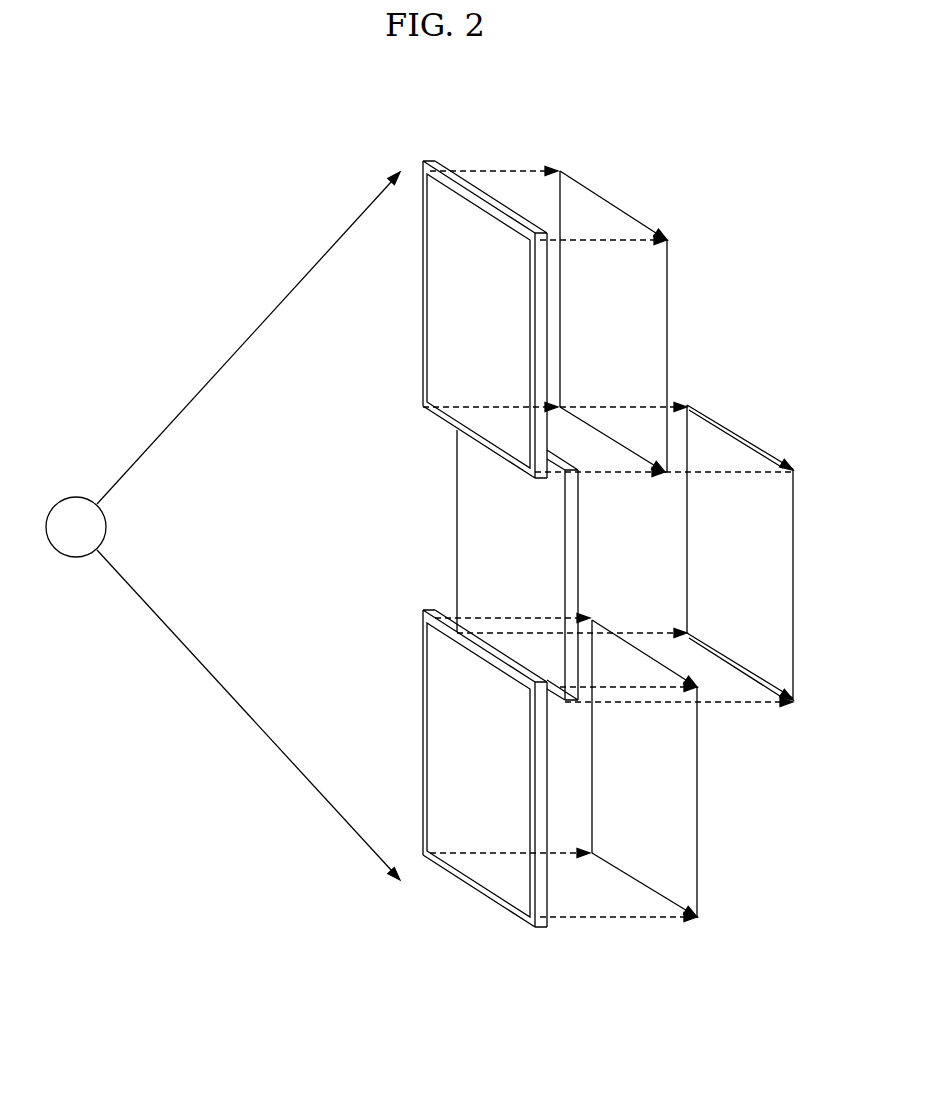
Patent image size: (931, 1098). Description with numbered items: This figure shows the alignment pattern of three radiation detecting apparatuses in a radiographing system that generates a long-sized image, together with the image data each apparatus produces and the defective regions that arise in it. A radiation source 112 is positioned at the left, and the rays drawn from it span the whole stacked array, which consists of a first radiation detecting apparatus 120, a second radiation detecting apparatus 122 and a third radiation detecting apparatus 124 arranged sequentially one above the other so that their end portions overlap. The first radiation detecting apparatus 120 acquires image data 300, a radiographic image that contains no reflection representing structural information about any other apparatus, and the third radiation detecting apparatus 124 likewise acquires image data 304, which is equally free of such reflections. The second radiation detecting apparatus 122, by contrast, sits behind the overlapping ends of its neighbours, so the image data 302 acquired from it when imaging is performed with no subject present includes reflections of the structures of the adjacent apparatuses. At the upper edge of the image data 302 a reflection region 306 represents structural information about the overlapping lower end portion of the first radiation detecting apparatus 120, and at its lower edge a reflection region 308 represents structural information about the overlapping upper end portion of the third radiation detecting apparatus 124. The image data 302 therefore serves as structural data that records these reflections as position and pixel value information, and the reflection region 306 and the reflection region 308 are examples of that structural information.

The eye of observer 112 is at (72, 551).
The first radiation detecting apparatus 120 is at (431, 159).
The second radiation detecting apparatus 122 is at (579, 533).
The third radiation detecting apparatus 124 is at (548, 800).
The image data acquired from the first radiation detecting apparatus 300 is at (612, 205).
The image data acquired from the second radiation detecting apparatus 302 is at (735, 433).
The image data acquired from the third radiation detecting apparatus 304 is at (698, 768).
The reflection region 306 is at (794, 468).
The reflection region 308 is at (796, 690).